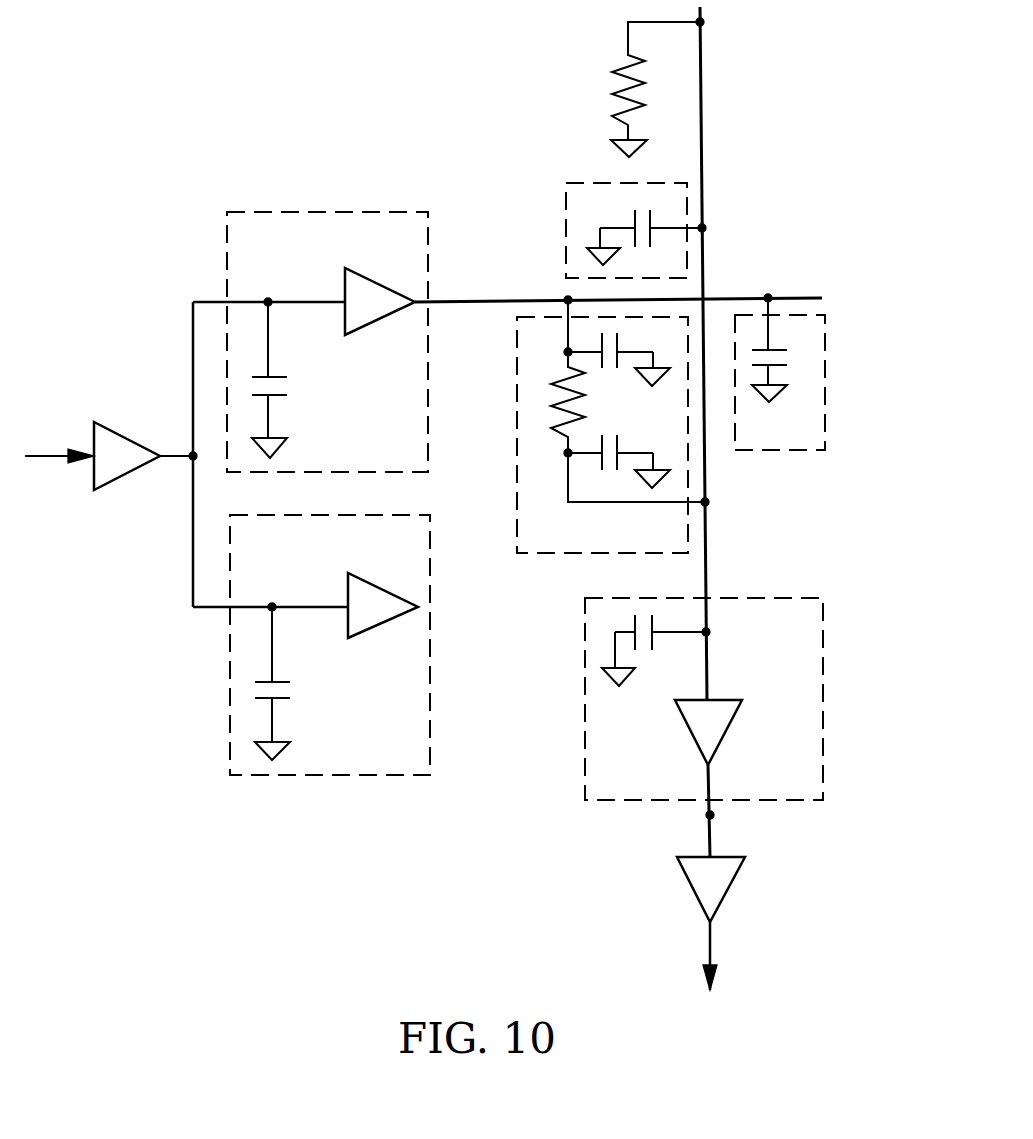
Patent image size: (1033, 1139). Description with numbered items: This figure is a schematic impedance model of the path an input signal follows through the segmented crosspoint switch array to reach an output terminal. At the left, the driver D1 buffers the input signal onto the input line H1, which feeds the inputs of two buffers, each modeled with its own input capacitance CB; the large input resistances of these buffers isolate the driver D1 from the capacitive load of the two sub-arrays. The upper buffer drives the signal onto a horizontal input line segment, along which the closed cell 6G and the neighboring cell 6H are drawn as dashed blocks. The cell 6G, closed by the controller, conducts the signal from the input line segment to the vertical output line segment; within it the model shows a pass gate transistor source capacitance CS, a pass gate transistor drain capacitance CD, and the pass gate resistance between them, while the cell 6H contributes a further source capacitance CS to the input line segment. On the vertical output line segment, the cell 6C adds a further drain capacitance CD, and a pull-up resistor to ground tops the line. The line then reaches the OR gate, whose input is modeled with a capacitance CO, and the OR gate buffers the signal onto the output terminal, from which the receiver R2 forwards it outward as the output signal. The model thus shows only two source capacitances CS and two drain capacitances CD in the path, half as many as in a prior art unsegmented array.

The driver D1 is at (99, 464).
The input line H1 is at (180, 448).
The input capacitance CB is at (291, 531).
The pass gate transistor drain capacitance CD is at (676, 272).
The cell 6C is at (634, 339).
The pass gate transistor source capacitance CS is at (693, 350).
The cell 6G is at (668, 425).
The cell 6H is at (784, 440).
The capacitance CO is at (654, 650).
The receiver R2 is at (695, 887).